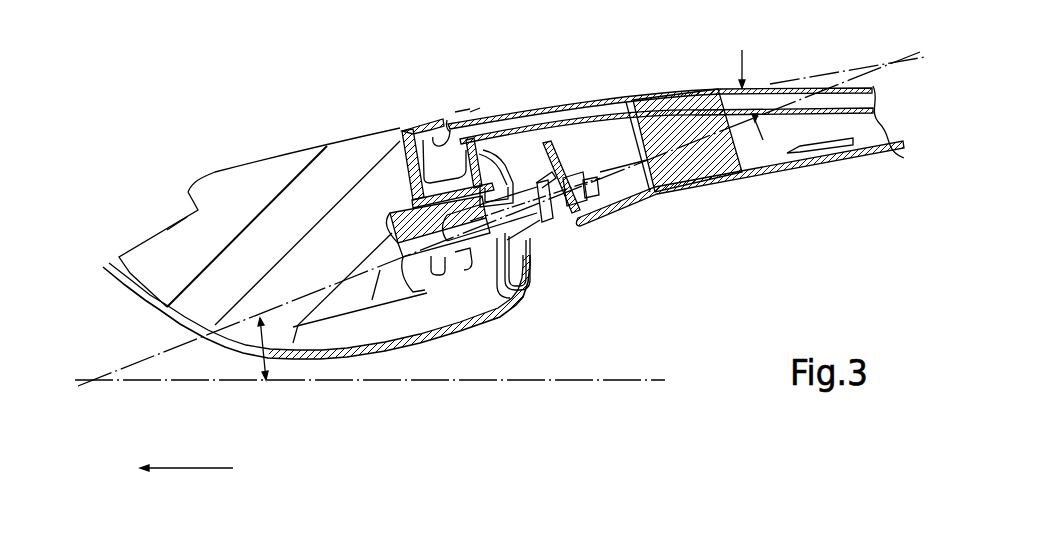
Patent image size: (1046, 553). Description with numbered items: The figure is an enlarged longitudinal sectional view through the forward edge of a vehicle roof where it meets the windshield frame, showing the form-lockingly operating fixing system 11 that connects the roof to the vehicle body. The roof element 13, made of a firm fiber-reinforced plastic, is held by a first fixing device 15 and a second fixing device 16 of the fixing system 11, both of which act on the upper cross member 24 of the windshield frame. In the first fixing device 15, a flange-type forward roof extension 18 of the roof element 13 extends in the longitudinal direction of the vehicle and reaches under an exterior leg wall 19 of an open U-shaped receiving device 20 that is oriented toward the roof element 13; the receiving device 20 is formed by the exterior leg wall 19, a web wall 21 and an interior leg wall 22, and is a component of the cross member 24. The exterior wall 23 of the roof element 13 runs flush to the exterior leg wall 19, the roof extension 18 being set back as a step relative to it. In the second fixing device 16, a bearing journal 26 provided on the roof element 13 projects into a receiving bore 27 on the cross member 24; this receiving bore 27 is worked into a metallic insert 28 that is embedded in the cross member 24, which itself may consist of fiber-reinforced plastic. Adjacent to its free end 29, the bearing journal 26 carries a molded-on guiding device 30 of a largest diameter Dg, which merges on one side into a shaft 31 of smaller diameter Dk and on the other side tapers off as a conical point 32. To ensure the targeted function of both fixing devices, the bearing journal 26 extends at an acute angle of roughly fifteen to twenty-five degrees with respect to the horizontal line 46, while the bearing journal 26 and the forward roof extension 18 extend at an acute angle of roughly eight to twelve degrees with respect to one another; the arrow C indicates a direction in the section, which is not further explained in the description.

The fixing system 11 is at (676, 147).
The roof element 13 is at (861, 86).
The first fixing device 15 is at (462, 102).
The second fixing device 16 is at (537, 250).
The forward roof extension 18 is at (447, 120).
The exterior leg wall 19 is at (413, 123).
The receiving device 20 is at (408, 148).
The web wall 21 is at (417, 177).
The interior leg wall 22 is at (417, 210).
The exterior wall 23 is at (477, 113).
The upper cross member 24 is at (293, 141).
The bearing journal 26 is at (508, 183).
The receiving bore 27 is at (424, 258).
The metallic insert 28 is at (390, 238).
The free end 29 is at (441, 256).
The guiding device 30 is at (508, 288).
The shaft 31 is at (545, 234).
The conical point 32 is at (393, 307).
The horizontal line 46 is at (160, 384).
The direction C is at (186, 458).
The smaller diameter Dk is at (578, 176).
The largest diameter Dg is at (455, 255).